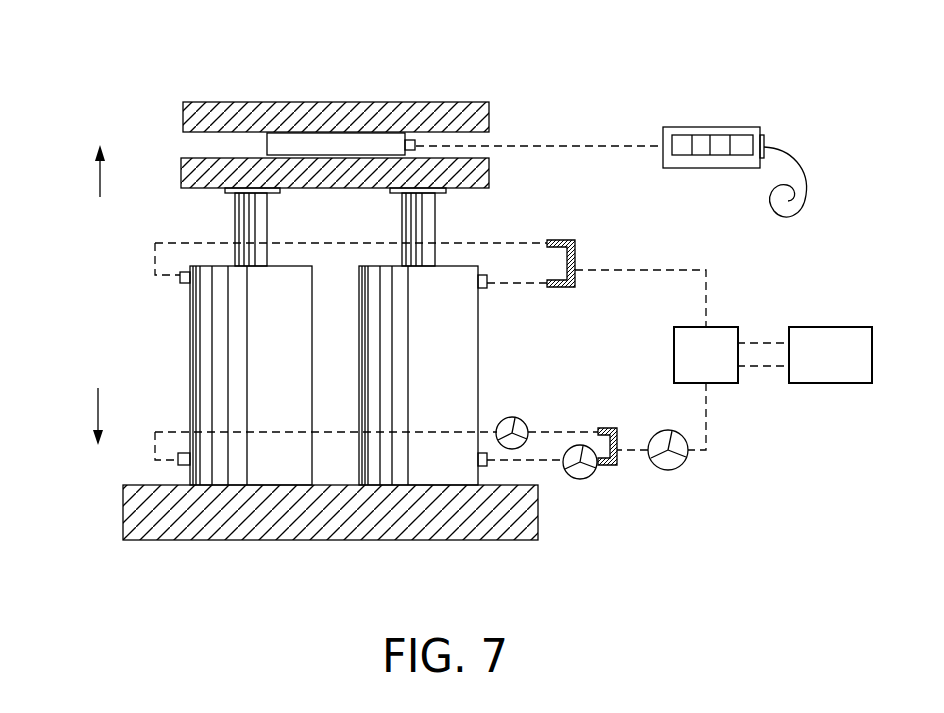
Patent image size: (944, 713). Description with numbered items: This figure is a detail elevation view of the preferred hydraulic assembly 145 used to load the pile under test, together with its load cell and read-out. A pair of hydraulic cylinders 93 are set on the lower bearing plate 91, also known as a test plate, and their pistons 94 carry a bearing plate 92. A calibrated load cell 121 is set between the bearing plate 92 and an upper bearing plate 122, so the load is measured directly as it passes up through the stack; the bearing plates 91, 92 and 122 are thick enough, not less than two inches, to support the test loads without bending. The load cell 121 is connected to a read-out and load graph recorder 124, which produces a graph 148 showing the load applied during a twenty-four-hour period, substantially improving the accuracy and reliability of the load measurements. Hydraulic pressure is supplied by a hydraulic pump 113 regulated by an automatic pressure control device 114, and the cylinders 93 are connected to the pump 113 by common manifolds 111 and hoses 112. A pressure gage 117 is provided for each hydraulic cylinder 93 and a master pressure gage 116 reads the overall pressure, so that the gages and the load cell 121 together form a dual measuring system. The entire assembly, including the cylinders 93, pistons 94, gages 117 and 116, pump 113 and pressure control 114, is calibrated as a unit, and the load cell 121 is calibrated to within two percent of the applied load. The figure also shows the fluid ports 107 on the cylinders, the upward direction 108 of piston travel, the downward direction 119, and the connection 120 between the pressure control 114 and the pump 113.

The bearing plate 91 is at (383, 540).
The bearing plate 92 is at (489, 172).
The hydraulic cylinders 93 is at (296, 341).
The pistons 94 is at (402, 216).
The fluid ports 107 is at (180, 282).
The upward direction arrow 108 is at (100, 173).
The common manifolds 111 is at (575, 253).
The hoses 112 is at (520, 285).
The hydraulic pump 113 is at (848, 371).
The automatic pressure control device 114 is at (722, 371).
The master pressure gage 116 is at (672, 470).
The pressure gages 117 is at (530, 420).
The downward direction arrow 119 is at (98, 412).
The control connection 120 is at (747, 366).
The calibrated load cell 121 is at (267, 146).
The bearing plate 122 is at (489, 117).
The read-out and load graph recorder 124 is at (683, 168).
The hydraulic assembly 145 is at (730, 58).
The graph 148 is at (810, 183).